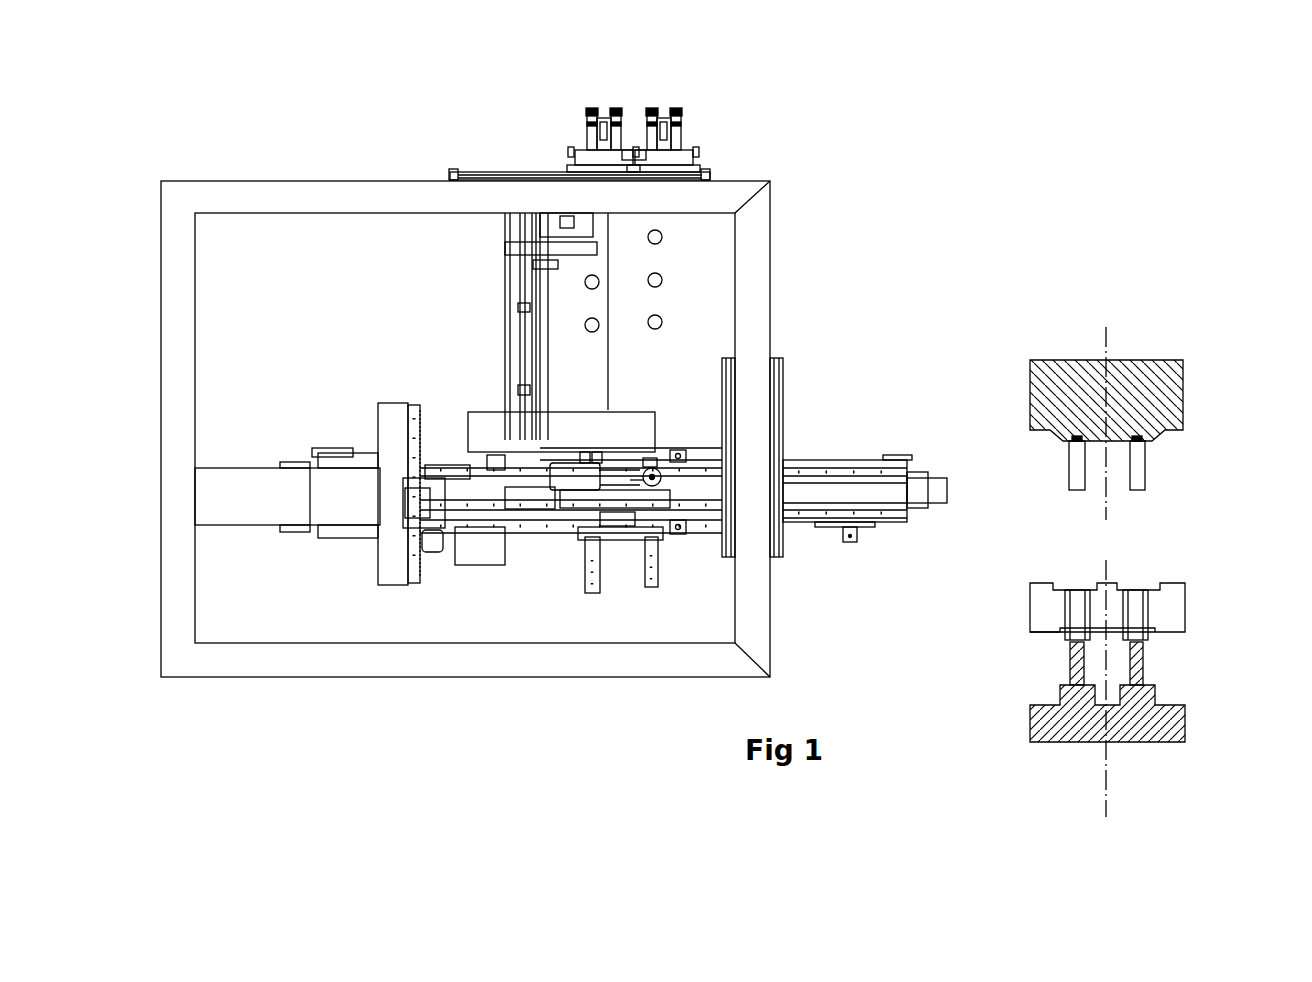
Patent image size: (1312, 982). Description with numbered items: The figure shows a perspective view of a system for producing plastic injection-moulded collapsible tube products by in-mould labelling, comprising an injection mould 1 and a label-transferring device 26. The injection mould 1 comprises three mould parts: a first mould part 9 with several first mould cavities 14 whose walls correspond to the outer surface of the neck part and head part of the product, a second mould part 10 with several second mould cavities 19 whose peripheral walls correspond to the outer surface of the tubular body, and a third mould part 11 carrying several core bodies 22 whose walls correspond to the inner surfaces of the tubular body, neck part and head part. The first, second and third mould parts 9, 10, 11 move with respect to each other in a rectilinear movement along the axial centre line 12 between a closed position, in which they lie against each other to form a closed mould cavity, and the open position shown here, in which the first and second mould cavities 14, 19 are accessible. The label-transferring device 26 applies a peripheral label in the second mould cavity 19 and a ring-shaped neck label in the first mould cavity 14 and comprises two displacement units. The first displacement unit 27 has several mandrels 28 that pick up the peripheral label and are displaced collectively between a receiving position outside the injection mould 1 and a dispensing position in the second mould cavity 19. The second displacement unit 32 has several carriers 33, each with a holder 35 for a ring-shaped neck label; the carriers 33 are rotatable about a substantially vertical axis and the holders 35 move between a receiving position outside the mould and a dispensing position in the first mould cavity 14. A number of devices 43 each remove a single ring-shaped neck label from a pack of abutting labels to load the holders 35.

The injection mould 1 is at (1218, 360).
The first mould part 9 is at (1120, 378).
The second mould part 10 is at (1165, 603).
The third mould part 11 is at (1170, 722).
The axial centre line 12 is at (1105, 787).
The first mould cavities 14 is at (1068, 443).
The second mould cavities 19 is at (1077, 608).
The core bodies 22 is at (1075, 660).
The label-transferring device 26 is at (778, 150).
The first displacement unit 27 is at (572, 553).
The mandrels 28 is at (593, 572).
The second displacement unit 32 is at (623, 462).
The carriers 33 is at (661, 478).
The holder 35 is at (650, 460).
The devices for removing a single ring-shaped neck label 43 is at (612, 100).